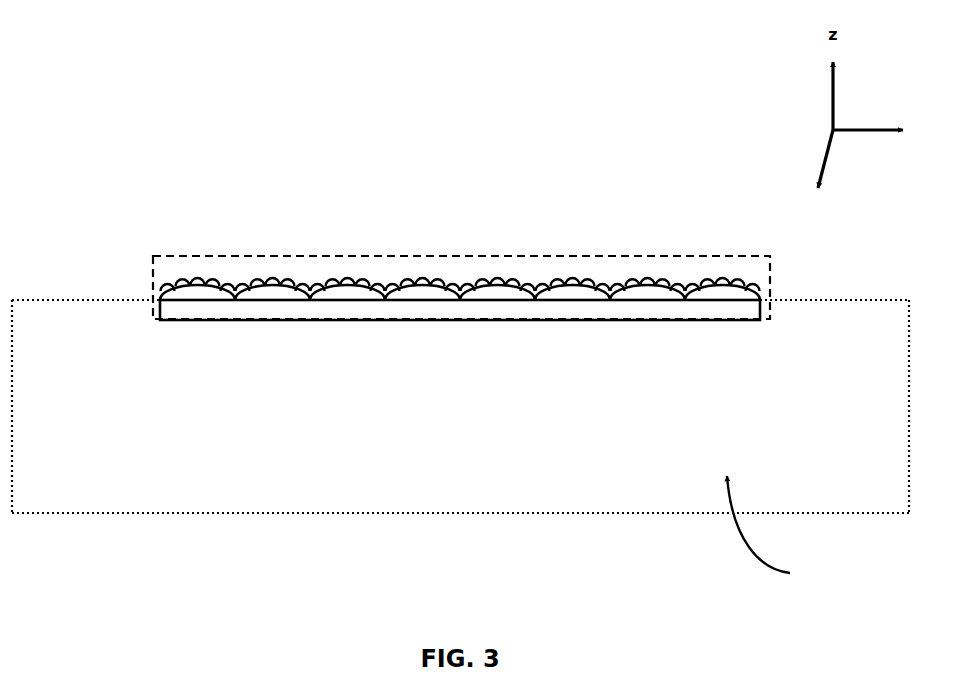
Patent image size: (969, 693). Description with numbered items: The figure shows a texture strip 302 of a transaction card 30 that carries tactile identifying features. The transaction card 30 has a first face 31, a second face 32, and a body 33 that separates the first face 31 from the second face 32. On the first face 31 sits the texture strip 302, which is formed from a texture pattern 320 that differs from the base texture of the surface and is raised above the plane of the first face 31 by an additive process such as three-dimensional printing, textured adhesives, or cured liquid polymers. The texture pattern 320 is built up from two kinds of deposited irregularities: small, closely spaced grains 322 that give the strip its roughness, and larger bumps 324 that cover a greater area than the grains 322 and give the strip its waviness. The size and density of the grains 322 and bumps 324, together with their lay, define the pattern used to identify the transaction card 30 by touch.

The transaction card 30 is at (254, 455).
The texture strip 302 is at (498, 310).
The first face 31 is at (821, 298).
The second face 32 is at (800, 514).
The body 33 is at (768, 529).
The texture pattern 320 is at (148, 289).
The grains 322 is at (412, 272).
The bumps 324 is at (567, 293).